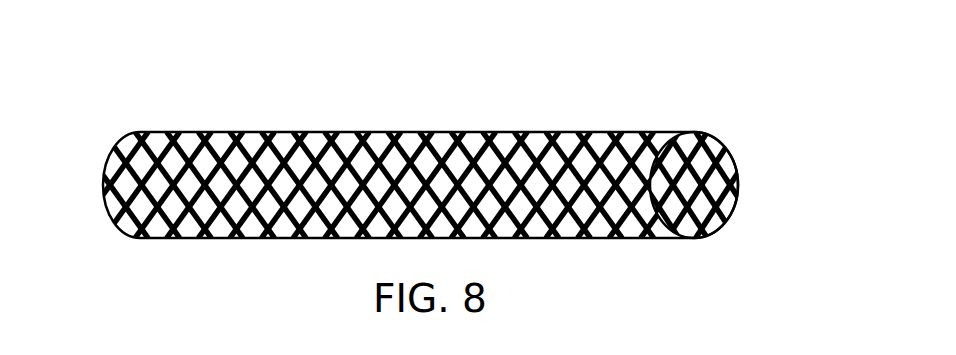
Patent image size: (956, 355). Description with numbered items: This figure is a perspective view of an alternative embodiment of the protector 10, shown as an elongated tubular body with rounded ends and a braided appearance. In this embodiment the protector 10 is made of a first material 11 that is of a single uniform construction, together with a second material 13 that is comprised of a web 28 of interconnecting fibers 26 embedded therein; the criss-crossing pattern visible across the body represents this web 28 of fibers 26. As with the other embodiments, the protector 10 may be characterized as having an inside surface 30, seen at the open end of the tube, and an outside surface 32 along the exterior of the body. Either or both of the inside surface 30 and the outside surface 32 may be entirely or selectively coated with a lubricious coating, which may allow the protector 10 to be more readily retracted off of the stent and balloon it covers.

The protector 10 is at (130, 278).
The first material 11 is at (315, 133).
The second material 13 is at (274, 237).
The interconnecting fibers 26 is at (557, 135).
The web 28 is at (470, 142).
The inside surface 30 is at (722, 192).
The outside surface 32 is at (612, 237).